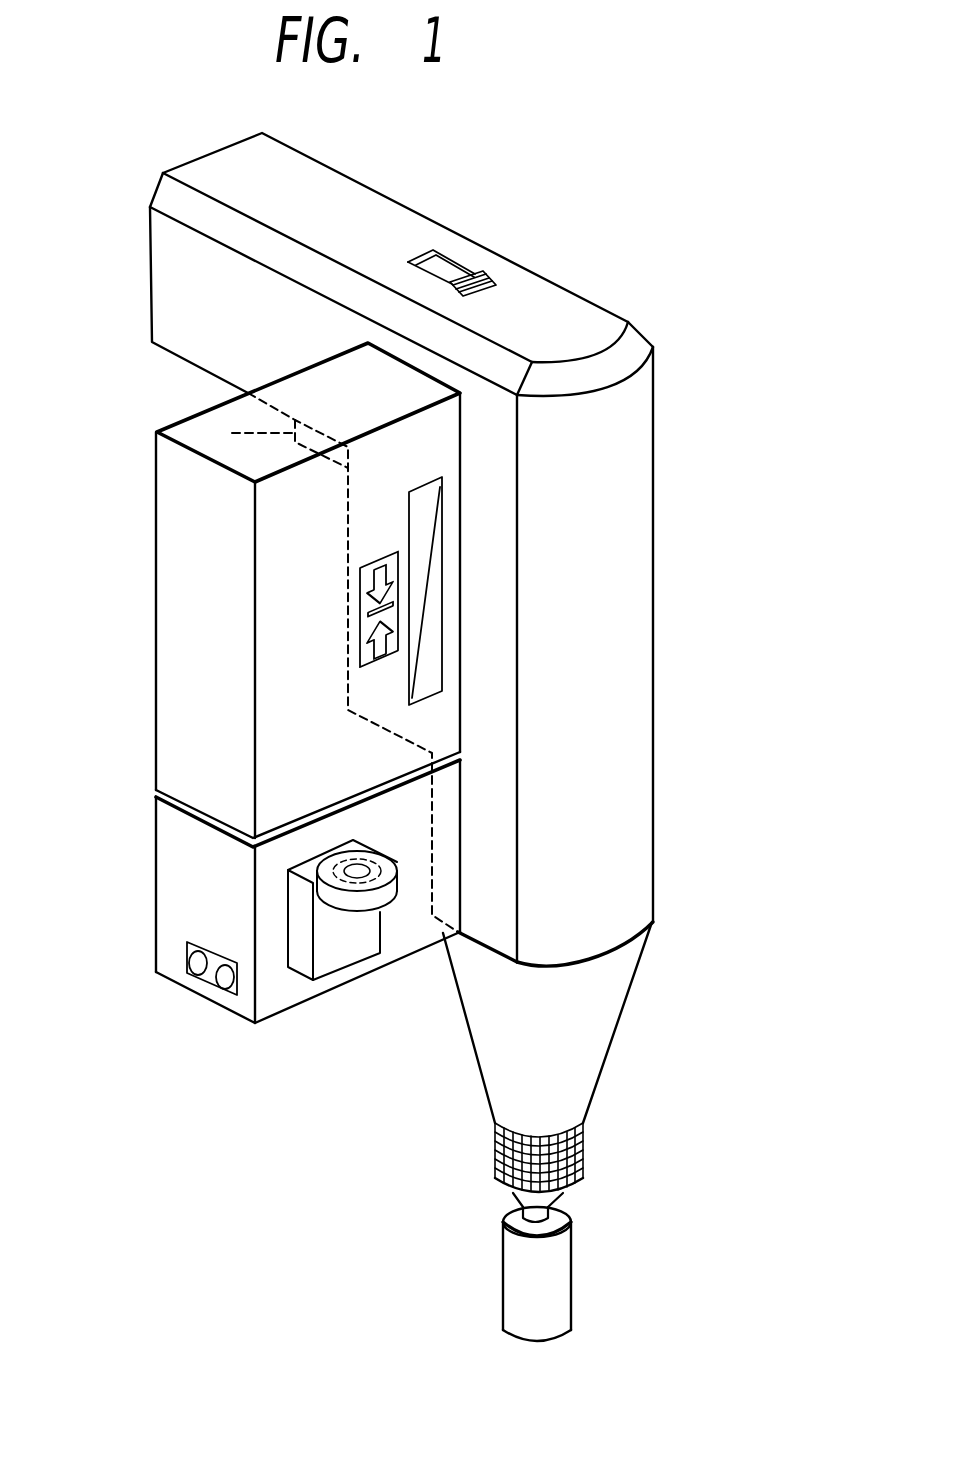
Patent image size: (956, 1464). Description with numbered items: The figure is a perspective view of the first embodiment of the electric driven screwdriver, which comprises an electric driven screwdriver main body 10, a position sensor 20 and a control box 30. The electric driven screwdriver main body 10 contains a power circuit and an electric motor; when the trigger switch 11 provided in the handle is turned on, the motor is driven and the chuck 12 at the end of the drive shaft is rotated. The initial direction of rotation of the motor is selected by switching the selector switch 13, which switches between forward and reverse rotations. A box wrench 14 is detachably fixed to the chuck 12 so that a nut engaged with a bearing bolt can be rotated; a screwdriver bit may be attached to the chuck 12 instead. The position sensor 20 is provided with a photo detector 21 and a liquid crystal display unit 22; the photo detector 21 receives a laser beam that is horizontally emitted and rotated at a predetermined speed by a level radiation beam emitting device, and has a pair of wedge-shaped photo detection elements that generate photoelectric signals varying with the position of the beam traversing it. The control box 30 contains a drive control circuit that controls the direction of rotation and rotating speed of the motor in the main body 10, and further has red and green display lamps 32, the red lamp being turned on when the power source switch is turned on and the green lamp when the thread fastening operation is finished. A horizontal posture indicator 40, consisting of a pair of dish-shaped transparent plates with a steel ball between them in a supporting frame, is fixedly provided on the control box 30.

The electric driven screwdriver main body 10 is at (580, 286).
The trigger switch 11 is at (232, 434).
The chuck 12 is at (567, 1198).
The selector switch 13 is at (481, 273).
The box wrench 14 is at (567, 1303).
The position sensor 20 is at (162, 617).
The photo detector 21 is at (408, 513).
The liquid crystal display unit 22 is at (360, 628).
The control box 30 is at (160, 874).
The display lamps 32 is at (203, 983).
The horizontal posture indicator 40 is at (357, 950).